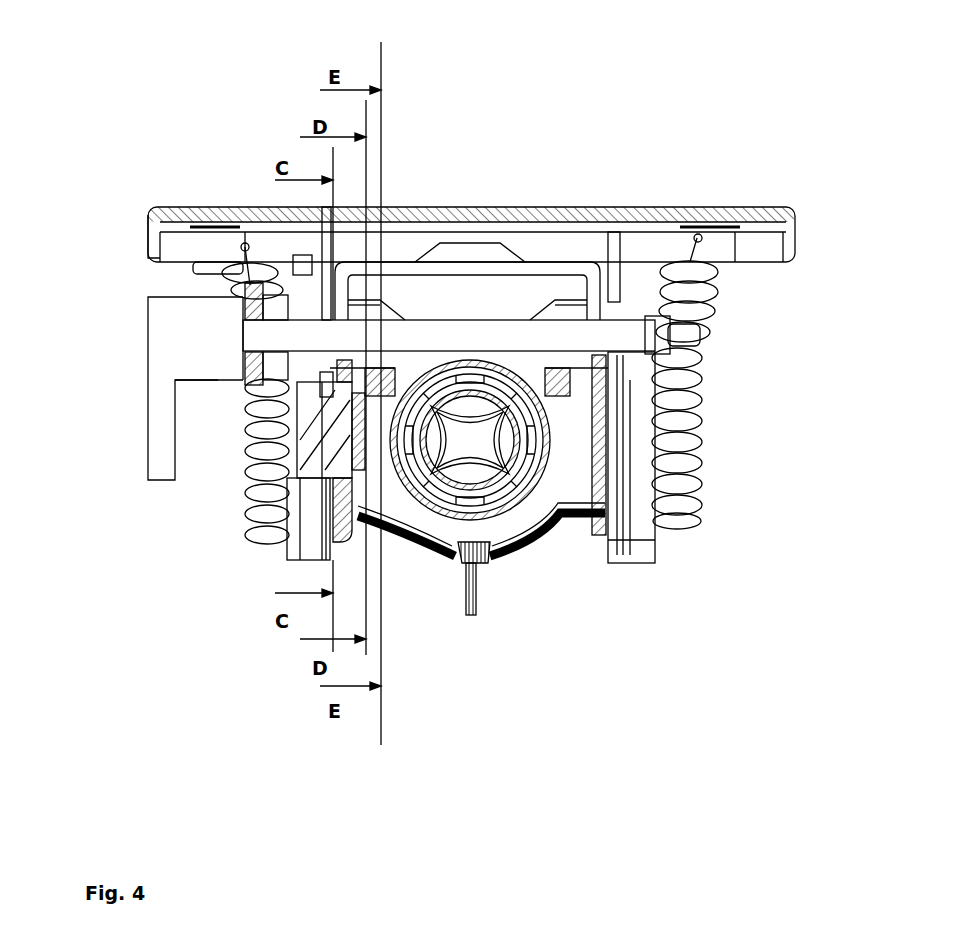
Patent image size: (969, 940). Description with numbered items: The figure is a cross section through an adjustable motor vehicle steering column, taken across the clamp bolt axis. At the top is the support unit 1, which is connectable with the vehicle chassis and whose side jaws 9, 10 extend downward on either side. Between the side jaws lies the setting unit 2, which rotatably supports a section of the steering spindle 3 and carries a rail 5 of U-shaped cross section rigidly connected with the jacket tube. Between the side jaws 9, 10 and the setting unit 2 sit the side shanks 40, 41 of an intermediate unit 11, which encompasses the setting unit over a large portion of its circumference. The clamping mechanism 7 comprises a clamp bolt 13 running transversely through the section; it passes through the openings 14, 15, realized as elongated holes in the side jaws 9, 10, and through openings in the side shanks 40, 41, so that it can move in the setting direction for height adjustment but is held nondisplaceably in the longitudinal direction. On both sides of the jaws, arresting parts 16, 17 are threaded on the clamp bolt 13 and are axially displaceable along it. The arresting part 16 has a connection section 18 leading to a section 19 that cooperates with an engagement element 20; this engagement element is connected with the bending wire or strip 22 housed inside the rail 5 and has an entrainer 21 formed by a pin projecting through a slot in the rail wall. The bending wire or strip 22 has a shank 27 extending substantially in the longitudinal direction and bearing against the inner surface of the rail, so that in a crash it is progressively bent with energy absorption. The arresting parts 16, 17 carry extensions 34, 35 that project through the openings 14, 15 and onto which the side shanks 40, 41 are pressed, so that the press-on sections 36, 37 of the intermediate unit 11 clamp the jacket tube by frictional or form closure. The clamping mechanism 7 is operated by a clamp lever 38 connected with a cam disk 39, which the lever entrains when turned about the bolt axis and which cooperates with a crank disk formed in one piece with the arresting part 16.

The support unit 1 is at (722, 205).
The setting unit 2 is at (622, 535).
The steering spindle 3 is at (498, 558).
The rail 5 is at (345, 548).
The clamping mechanism 7 is at (142, 323).
The side jaw 9 is at (327, 257).
The side jaw 10 is at (615, 468).
The intermediate unit 11 is at (610, 412).
The clamp bolt 13 is at (398, 330).
The opening 14 is at (255, 267).
The opening 15 is at (637, 250).
The arresting part 16 is at (305, 425).
The arresting part 17 is at (746, 395).
The connection section 18 is at (245, 420).
The section 19 is at (315, 448).
The engagement element 20 is at (348, 470).
The entrainer 21 is at (327, 480).
The bending wire or strip 22 is at (395, 545).
The shank 27 is at (425, 345).
The extension 34 is at (160, 222).
The extension 35 is at (700, 305).
The press-on section 36 is at (421, 380).
The press-on section 37 is at (525, 350).
The clamp lever 38 is at (168, 390).
The cam disk 39 is at (230, 298).
The side shank 40 is at (255, 365).
The side shank 41 is at (610, 493).